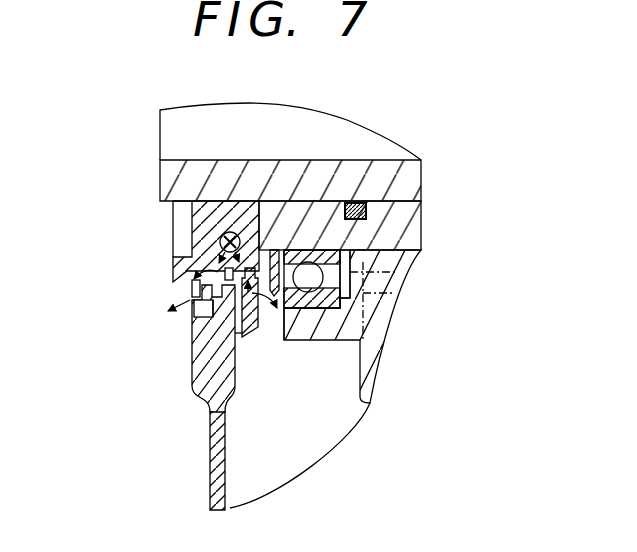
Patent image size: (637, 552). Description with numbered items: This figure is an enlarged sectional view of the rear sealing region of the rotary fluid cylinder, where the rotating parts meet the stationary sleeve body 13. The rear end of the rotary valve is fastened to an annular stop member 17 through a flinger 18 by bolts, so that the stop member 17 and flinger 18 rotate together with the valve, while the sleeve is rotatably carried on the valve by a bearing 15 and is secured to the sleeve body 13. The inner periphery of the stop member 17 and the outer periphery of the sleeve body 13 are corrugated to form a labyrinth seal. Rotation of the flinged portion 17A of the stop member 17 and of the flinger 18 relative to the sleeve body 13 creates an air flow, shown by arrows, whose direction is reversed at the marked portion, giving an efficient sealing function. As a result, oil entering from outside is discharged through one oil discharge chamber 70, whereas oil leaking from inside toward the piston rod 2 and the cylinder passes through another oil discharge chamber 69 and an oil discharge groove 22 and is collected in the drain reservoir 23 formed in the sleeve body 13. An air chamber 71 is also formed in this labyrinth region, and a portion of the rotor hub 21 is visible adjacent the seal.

The piston rod 2 is at (175, 182).
The sleeve body 13 is at (216, 472).
The bearing 15 is at (305, 257).
The annular stop member 17 is at (202, 238).
The flinged portion 17A is at (178, 293).
The flinger 18 is at (276, 245).
The rotor hub 21 is at (194, 300).
The oil discharge groove 22 is at (249, 318).
The drain reservoir 23 is at (323, 402).
The oil discharge chamber 69 is at (269, 300).
The oil discharge chamber 70 is at (205, 310).
The air chamber 71 is at (213, 313).